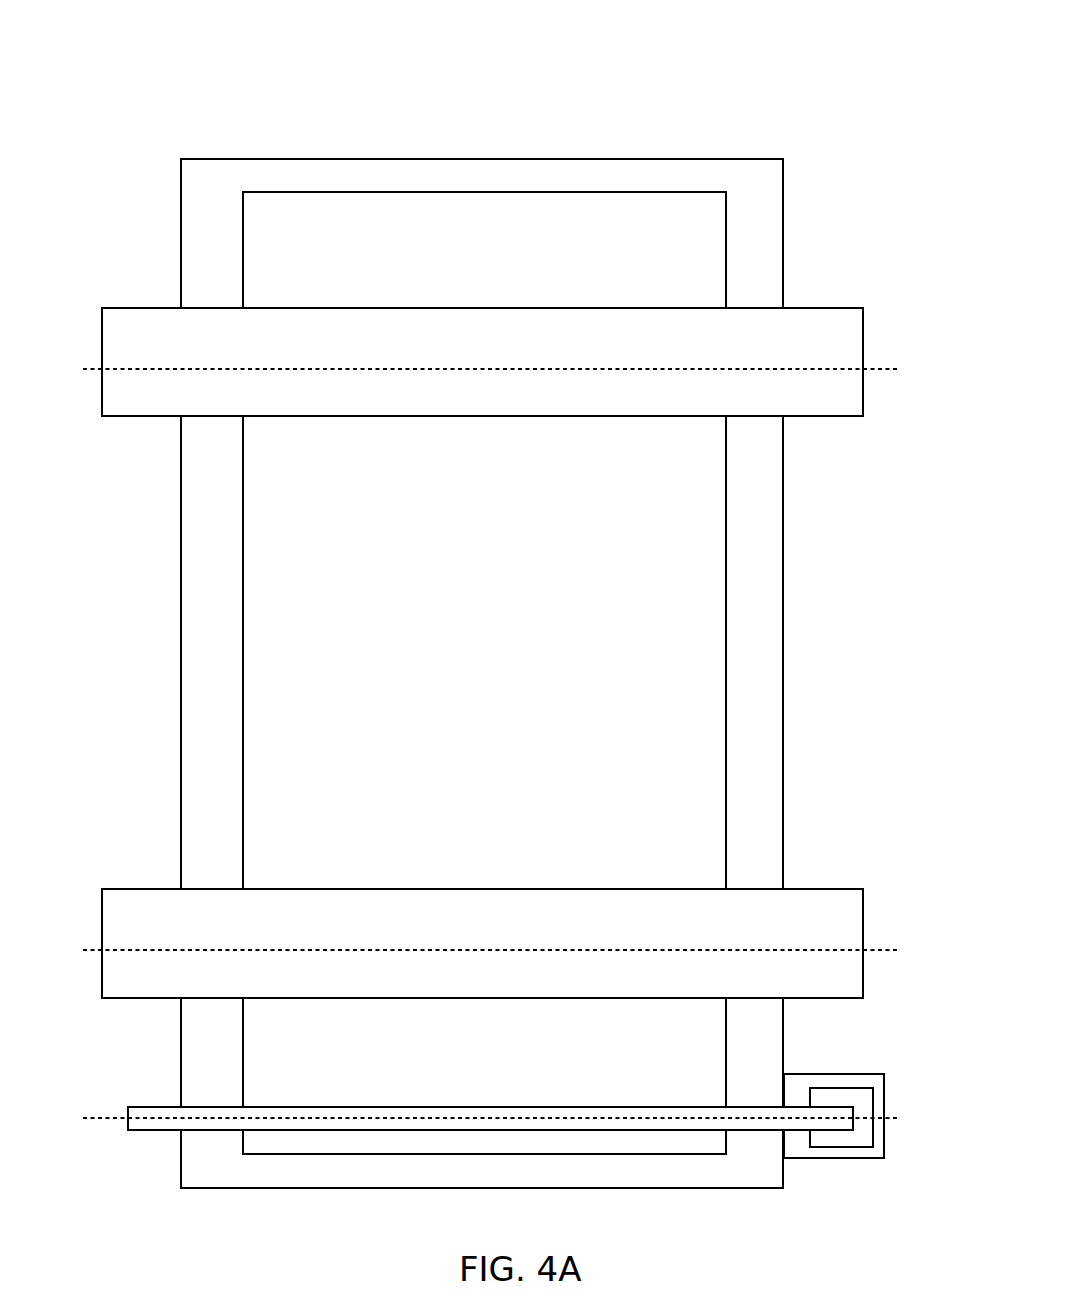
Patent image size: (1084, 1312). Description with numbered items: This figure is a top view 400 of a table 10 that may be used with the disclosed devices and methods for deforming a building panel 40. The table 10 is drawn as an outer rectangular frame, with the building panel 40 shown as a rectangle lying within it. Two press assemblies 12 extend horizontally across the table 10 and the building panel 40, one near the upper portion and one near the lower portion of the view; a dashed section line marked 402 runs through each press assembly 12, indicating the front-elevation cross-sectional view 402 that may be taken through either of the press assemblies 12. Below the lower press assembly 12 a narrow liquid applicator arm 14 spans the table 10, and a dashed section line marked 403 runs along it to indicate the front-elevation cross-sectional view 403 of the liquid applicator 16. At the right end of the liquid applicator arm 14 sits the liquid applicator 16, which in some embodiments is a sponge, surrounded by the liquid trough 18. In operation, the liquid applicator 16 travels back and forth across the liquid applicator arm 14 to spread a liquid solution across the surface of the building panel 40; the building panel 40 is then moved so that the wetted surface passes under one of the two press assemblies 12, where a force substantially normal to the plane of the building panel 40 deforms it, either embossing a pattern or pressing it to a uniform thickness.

The top view 400 is at (150, 63).
The table 10 is at (783, 159).
The building panel 40 is at (243, 546).
The press assemblies 12 is at (863, 308).
The front-elevation cross-sectional view 402 is at (521, 660).
The liquid applicator arm 14 is at (160, 1107).
The liquid applicator 16 is at (873, 1088).
The liquid trough 18 is at (884, 1158).
The front-elevation cross-sectional view 403 is at (521, 1118).